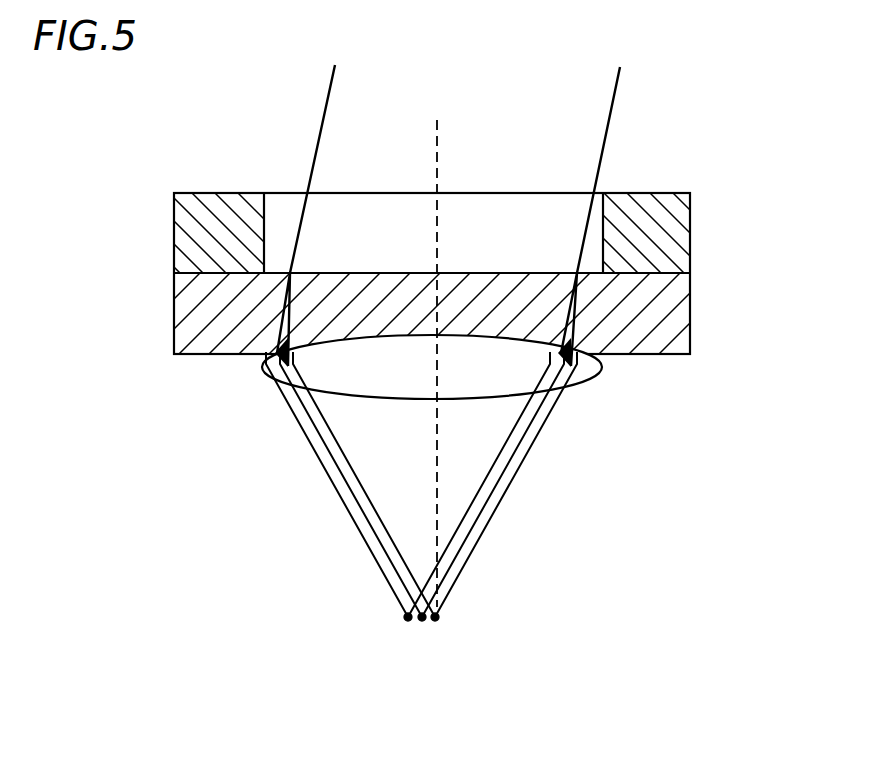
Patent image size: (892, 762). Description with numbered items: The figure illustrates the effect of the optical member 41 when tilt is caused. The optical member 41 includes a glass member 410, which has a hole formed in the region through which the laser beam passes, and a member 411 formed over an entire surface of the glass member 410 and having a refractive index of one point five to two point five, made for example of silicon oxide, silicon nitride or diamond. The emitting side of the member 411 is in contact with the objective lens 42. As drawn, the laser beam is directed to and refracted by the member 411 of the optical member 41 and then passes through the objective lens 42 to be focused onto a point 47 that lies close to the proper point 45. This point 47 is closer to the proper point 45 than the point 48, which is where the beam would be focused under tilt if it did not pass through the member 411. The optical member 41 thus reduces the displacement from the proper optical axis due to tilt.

The optical member 41 is at (467, 392).
The glass member 410 is at (220, 210).
The member 411 is at (642, 333).
The objective lens 42 is at (402, 378).
The proper point 45 is at (436, 621).
The point 47 is at (422, 621).
The point 48 is at (408, 621).